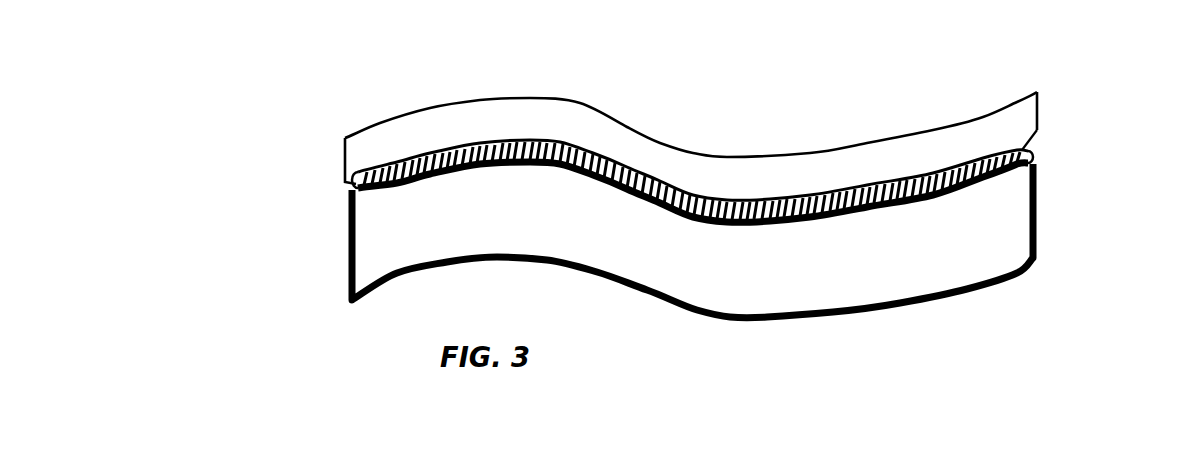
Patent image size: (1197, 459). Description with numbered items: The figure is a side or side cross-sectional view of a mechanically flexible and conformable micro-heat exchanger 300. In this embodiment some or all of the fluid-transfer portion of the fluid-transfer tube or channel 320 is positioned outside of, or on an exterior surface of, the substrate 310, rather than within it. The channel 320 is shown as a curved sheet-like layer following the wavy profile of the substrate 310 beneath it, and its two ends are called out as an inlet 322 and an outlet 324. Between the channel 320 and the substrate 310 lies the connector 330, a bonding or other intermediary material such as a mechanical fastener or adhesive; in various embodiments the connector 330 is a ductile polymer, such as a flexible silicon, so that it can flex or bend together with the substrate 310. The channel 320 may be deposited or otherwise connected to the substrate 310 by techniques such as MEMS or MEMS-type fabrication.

The mechanically flexible and conformable micro-heat exchanger 300 is at (693, 181).
The substrate 310 is at (774, 282).
The fluid-transfer channel 320 is at (693, 131).
The inlet 322 is at (338, 165).
The outlet 324 is at (1046, 105).
The connector 330 is at (347, 191).